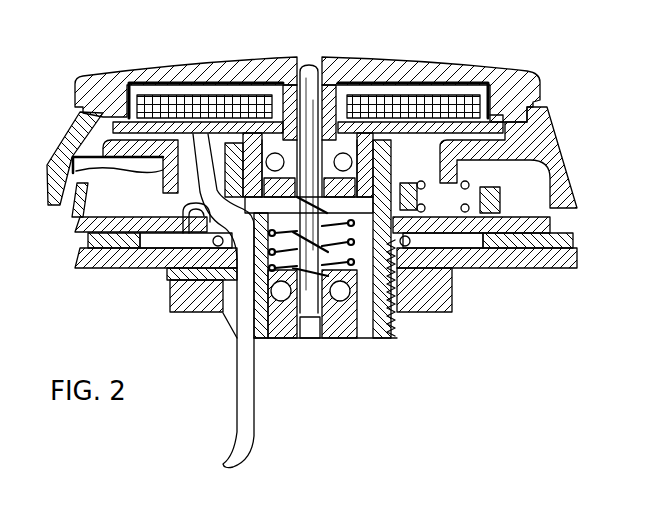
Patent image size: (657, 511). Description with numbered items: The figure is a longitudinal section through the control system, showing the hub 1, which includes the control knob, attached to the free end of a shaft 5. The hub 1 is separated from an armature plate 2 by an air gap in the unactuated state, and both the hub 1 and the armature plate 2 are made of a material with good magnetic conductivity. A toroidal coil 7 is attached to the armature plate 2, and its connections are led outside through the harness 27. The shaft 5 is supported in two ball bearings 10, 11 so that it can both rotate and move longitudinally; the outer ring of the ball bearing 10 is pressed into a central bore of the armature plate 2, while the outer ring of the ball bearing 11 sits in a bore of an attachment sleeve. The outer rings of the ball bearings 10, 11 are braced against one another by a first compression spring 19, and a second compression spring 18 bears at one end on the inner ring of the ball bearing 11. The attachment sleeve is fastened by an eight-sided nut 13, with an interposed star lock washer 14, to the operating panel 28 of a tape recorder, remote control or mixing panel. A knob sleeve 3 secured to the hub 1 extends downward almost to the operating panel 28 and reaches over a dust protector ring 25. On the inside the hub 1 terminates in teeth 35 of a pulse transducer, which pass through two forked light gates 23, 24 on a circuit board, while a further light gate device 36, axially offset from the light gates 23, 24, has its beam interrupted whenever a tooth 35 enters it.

The hub 1 is at (224, 72).
The armature plate 2 is at (152, 125).
The knob sleeve 3 is at (82, 138).
The shaft 5 is at (313, 83).
The toroidal coil 7 is at (390, 107).
The ball bearing 10 is at (282, 117).
The ball bearing 11 is at (338, 312).
The eight-sided nut 13 is at (443, 317).
The star lock washer 14 is at (167, 272).
The second compression spring 18 is at (310, 340).
The first compression spring 19 is at (379, 330).
The light gate 23 is at (420, 183).
The light gate 24 is at (465, 183).
The dust protector ring 25 is at (80, 193).
The harness 27 is at (250, 428).
The operating panel 28 is at (82, 258).
The teeth 35 is at (73, 168).
The further light gate device 36 is at (425, 233).